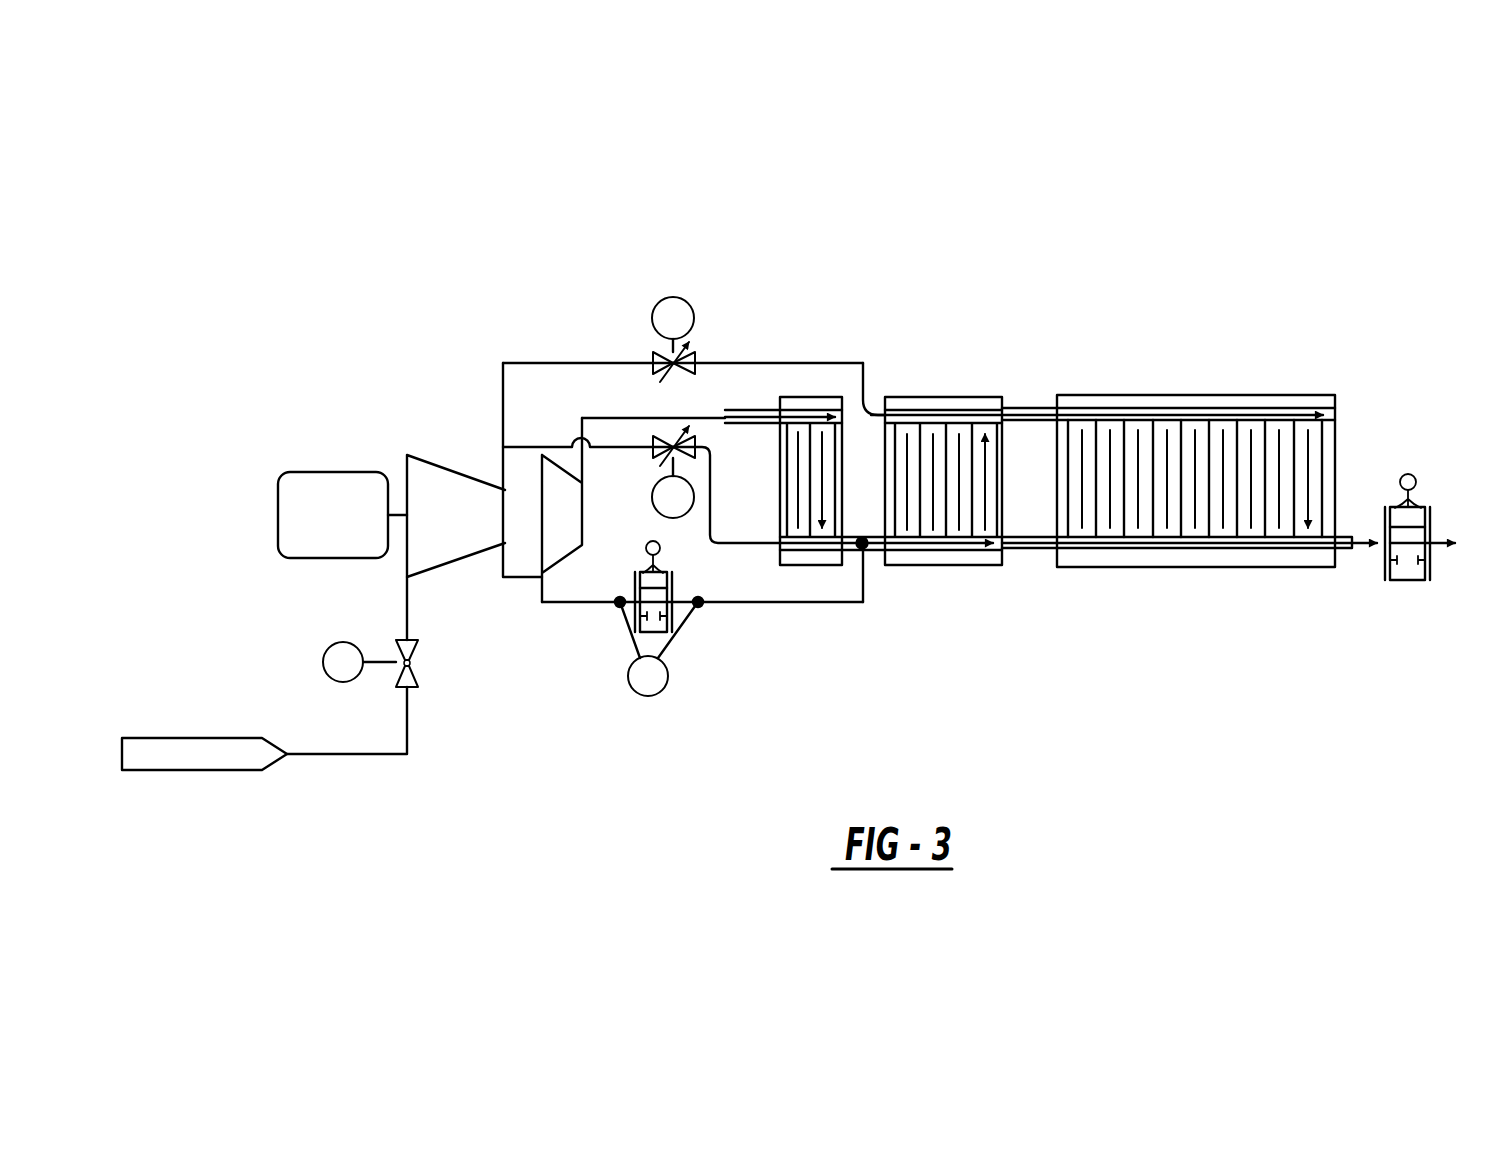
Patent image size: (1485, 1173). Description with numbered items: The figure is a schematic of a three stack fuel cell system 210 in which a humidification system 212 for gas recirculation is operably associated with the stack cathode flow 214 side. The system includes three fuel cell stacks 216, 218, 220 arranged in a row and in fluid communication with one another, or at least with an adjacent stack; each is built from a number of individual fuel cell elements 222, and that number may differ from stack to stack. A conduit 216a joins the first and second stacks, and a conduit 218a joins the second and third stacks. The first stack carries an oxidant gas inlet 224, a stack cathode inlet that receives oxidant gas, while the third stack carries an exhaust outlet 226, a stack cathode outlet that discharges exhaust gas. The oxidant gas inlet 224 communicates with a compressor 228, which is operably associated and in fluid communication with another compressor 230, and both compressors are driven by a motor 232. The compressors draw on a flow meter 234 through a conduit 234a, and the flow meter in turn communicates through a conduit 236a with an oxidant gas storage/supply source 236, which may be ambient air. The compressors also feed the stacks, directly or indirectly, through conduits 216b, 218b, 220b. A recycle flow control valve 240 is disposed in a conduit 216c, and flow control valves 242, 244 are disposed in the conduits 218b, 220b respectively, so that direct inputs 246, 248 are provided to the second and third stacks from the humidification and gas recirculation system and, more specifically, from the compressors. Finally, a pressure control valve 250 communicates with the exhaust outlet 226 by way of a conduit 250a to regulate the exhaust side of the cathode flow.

The three stack fuel cell system 210 is at (1037, 287).
The humidification system 212 is at (373, 353).
The stack cathode flow 214 is at (528, 315).
The fuel cell stack 216 is at (825, 397).
The conduit 216a is at (865, 549).
The conduit 216b is at (627, 418).
The conduit 216c is at (780, 604).
The fuel cell stack 218 is at (972, 397).
The conduit 218a is at (1042, 409).
The conduit 218b is at (767, 543).
The fuel cell stack 220 is at (1219, 395).
The conduit 220b is at (882, 414).
The fuel cell elements 222 is at (1318, 455).
The oxidant gas inlet 224 is at (763, 411).
The exhaust outlet 226 is at (1352, 550).
The compressor 228 is at (562, 564).
The compressor 230 is at (443, 566).
The motor 232 is at (308, 471).
The flow meter 234 is at (418, 651).
The conduit 234a is at (406, 598).
The oxidant gas storage/supply source 236 is at (206, 738).
The conduit 236a is at (340, 755).
The recycle flow control valve 240 is at (673, 582).
The flow control valve 242 is at (653, 452).
The flow control valve 244 is at (650, 360).
The direct input 246 is at (957, 548).
The direct input 248 is at (1278, 411).
The pressure control valve 250 is at (1431, 562).
The conduit 250a is at (1383, 540).